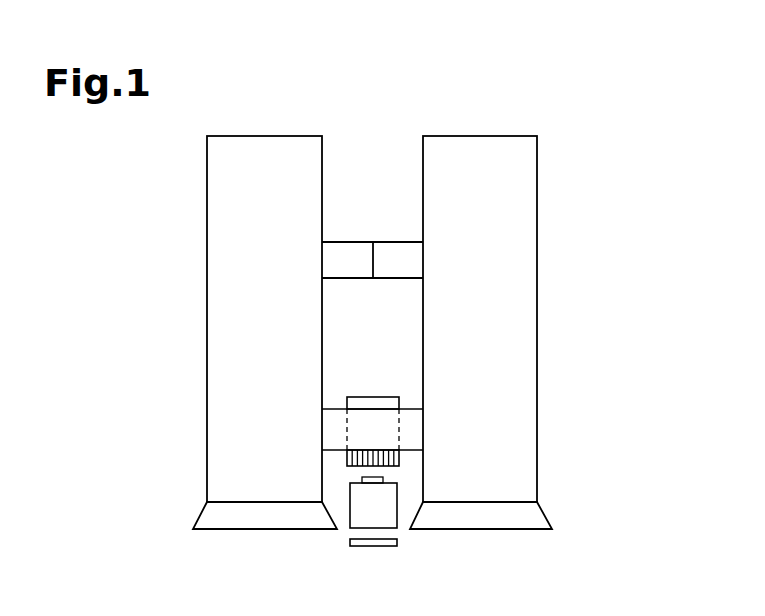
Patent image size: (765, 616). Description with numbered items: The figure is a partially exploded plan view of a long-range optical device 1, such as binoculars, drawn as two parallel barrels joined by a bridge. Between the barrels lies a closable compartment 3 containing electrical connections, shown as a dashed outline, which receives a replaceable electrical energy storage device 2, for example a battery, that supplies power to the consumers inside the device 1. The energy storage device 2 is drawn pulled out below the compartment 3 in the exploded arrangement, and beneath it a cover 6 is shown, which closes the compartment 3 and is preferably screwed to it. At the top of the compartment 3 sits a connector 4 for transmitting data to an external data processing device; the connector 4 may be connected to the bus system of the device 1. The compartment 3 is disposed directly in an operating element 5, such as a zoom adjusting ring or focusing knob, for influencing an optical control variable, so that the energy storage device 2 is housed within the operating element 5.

The long-range optical device 1 is at (536, 105).
The replaceable electrical energy storage device 2 is at (360, 492).
The closable compartment 3 is at (390, 428).
The connector 4 is at (393, 401).
The operating element 5 is at (395, 457).
The cover 6 is at (374, 547).